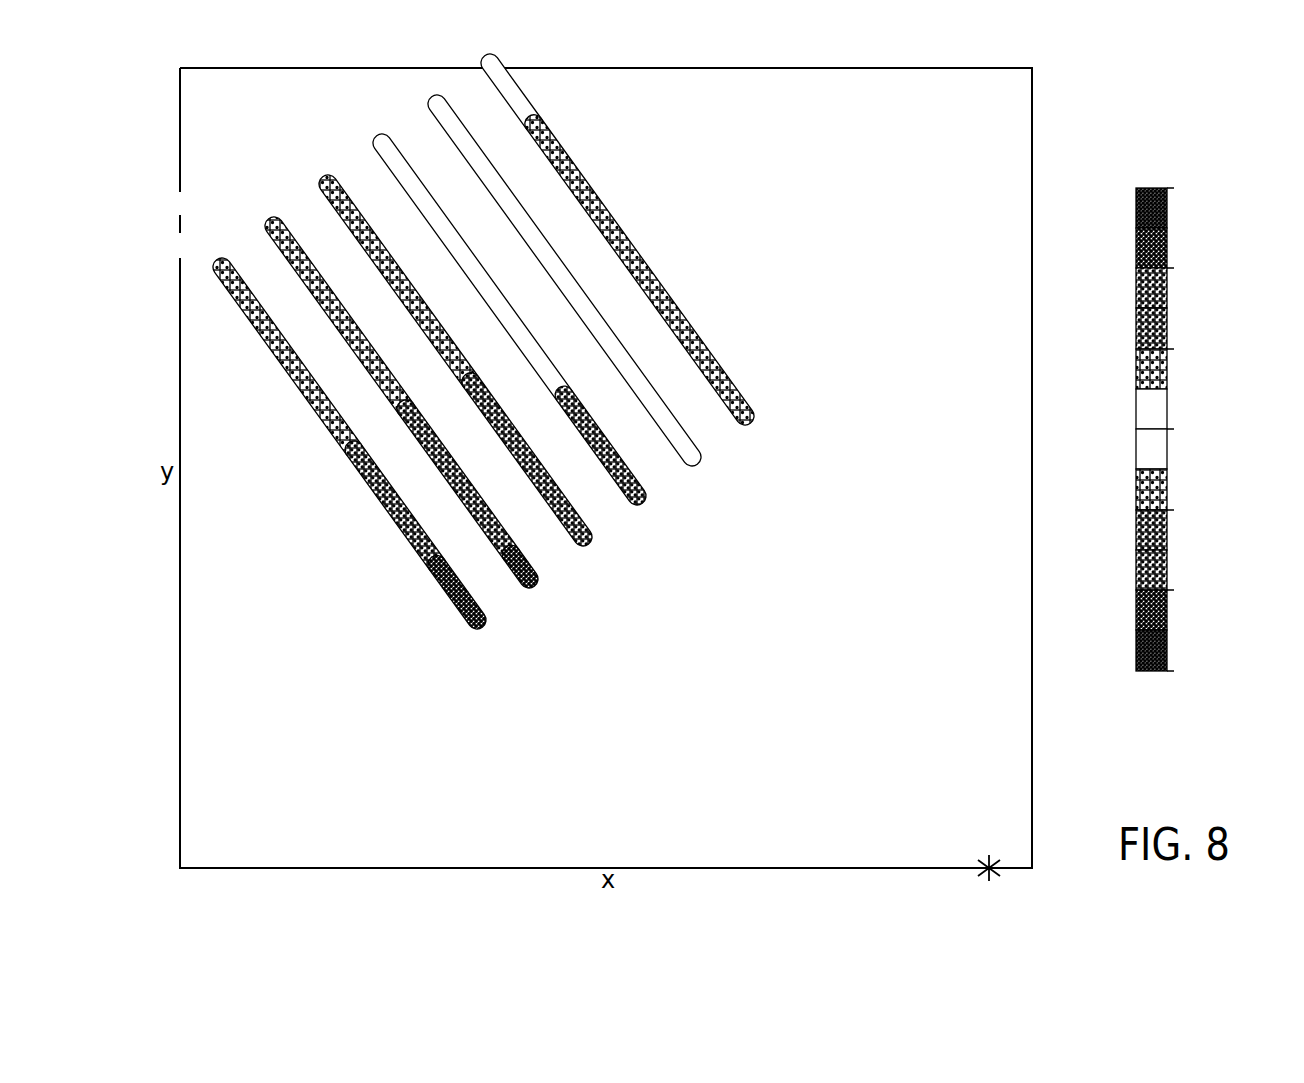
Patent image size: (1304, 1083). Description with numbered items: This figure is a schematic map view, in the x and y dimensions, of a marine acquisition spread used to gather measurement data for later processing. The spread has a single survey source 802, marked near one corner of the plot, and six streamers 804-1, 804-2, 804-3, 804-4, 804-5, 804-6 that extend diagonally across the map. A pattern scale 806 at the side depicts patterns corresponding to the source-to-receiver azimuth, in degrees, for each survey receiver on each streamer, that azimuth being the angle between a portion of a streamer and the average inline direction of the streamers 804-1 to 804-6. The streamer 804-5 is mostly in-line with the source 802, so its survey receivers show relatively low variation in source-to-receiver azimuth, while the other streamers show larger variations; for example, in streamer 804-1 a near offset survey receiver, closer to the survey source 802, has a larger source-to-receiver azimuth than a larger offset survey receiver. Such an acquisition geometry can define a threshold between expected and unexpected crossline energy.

The survey source 802 is at (992, 877).
The streamer 804-1 is at (483, 628).
The streamer 804-2 is at (535, 587).
The streamer 804-3 is at (589, 545).
The streamer 804-4 is at (643, 504).
The streamer 804-5 is at (698, 465).
The streamer 804-6 is at (751, 424).
The pattern scale 806 is at (1150, 187).